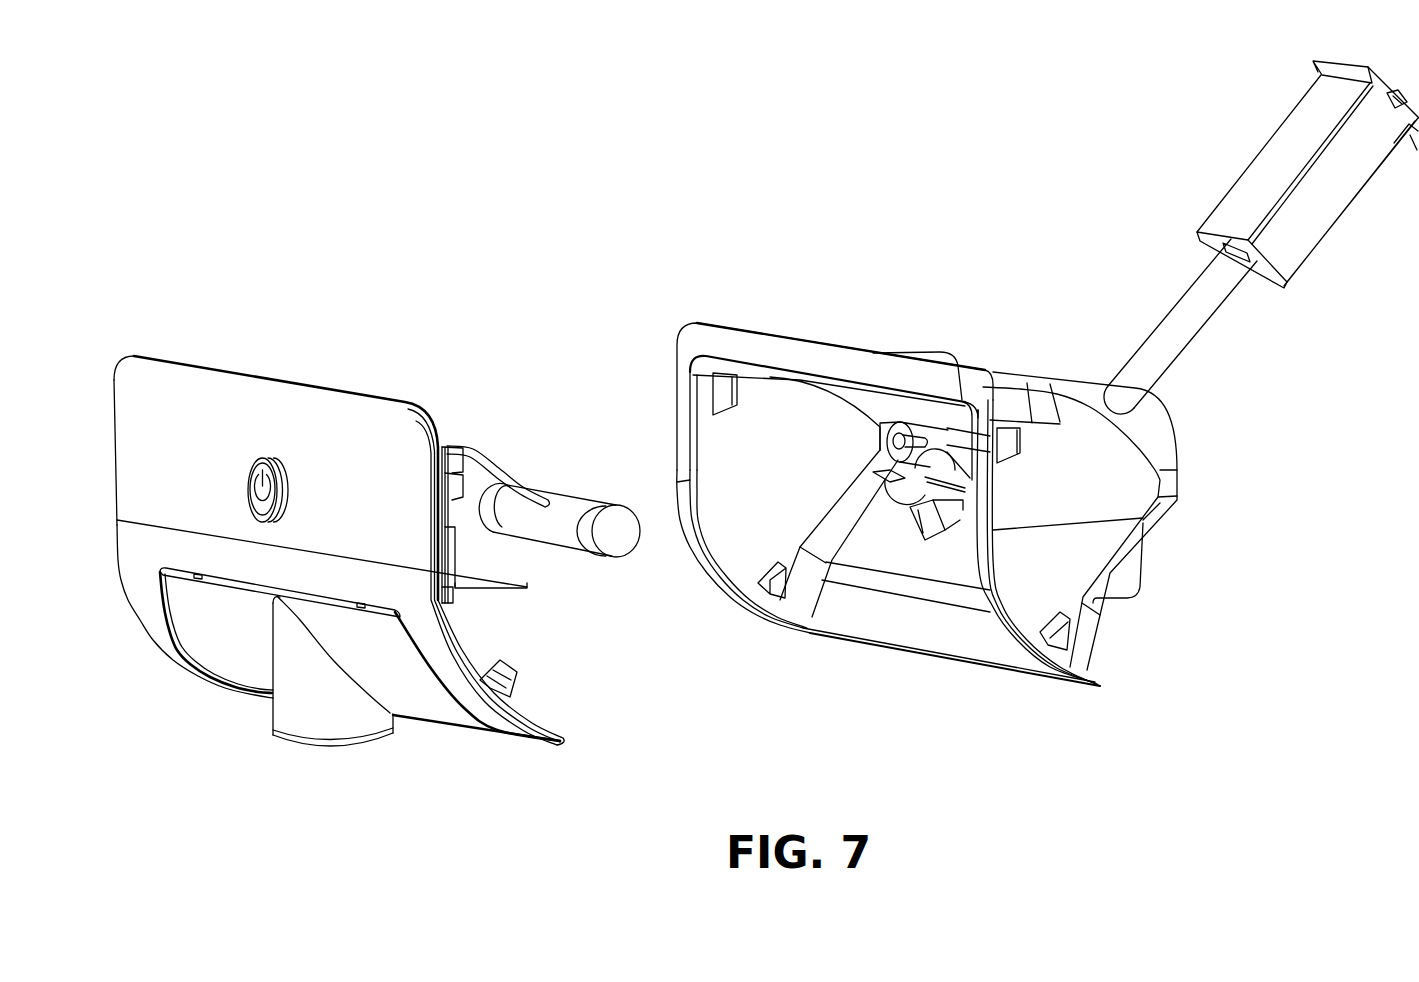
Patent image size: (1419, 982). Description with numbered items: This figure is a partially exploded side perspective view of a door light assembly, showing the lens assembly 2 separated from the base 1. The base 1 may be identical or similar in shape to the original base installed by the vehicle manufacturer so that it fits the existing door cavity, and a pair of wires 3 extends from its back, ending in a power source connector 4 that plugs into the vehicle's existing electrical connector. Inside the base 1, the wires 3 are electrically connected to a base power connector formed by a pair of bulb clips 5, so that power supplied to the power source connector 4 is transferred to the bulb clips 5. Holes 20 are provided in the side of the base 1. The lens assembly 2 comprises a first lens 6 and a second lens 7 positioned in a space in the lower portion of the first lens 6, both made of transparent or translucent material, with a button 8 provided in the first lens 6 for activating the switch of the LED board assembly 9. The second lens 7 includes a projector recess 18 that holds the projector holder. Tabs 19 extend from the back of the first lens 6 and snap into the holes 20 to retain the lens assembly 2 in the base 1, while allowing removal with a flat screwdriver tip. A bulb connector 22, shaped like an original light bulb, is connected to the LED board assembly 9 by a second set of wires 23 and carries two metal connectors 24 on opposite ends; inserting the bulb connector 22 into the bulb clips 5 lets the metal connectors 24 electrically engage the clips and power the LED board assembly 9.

The base 1 is at (1120, 474).
The lens assembly 2 is at (370, 418).
The pair of wires 3 is at (1193, 318).
The power source connector 4 is at (1270, 160).
The bulb clips 5 is at (937, 463).
The first lens 6 is at (158, 387).
The second lens 7 is at (413, 693).
The button 8 is at (256, 490).
The LED board assembly 9 is at (477, 607).
The projector recess 18 is at (323, 728).
The tabs 19 is at (462, 482).
The holes 20 is at (737, 393).
The bulb connector 22 is at (567, 502).
The second set of wires 23 is at (508, 458).
The metal connectors 24 is at (601, 537).